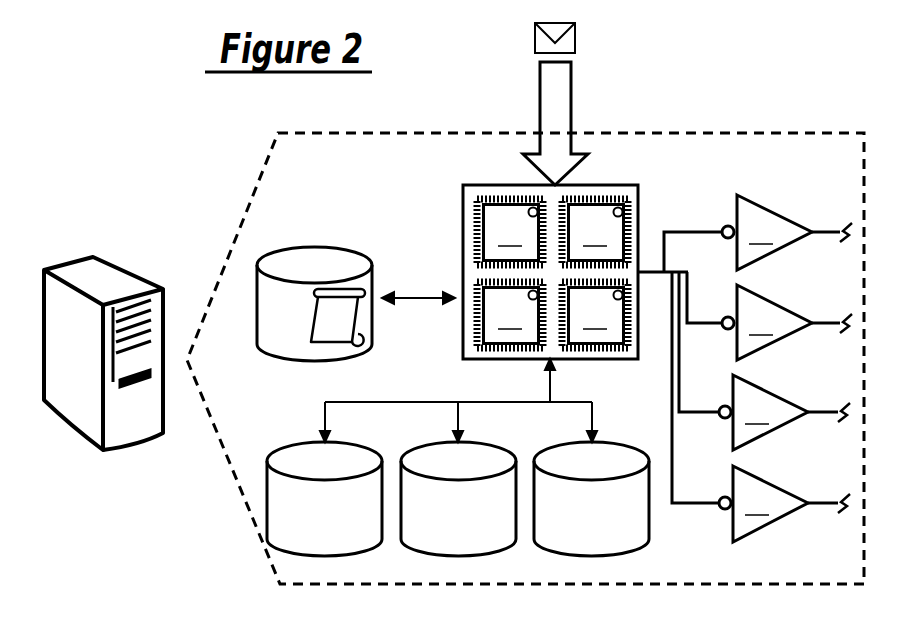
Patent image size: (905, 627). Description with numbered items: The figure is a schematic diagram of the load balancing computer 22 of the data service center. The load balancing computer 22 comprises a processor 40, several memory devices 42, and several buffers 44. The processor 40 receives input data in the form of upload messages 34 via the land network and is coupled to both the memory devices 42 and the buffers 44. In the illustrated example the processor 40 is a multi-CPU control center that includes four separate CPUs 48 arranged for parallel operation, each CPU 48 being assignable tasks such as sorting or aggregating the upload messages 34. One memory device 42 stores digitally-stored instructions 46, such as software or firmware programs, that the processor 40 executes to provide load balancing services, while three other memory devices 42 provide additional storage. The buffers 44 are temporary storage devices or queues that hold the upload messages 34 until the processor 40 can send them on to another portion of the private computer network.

The load balancing computer 22 is at (152, 258).
The upload message 34 is at (575, 33).
The processor 40 is at (628, 185).
The memory device 42 is at (338, 249).
The buffer 44 is at (785, 368).
The digitally-stored instructions 46 is at (313, 322).
The CPU 48 is at (552, 273).